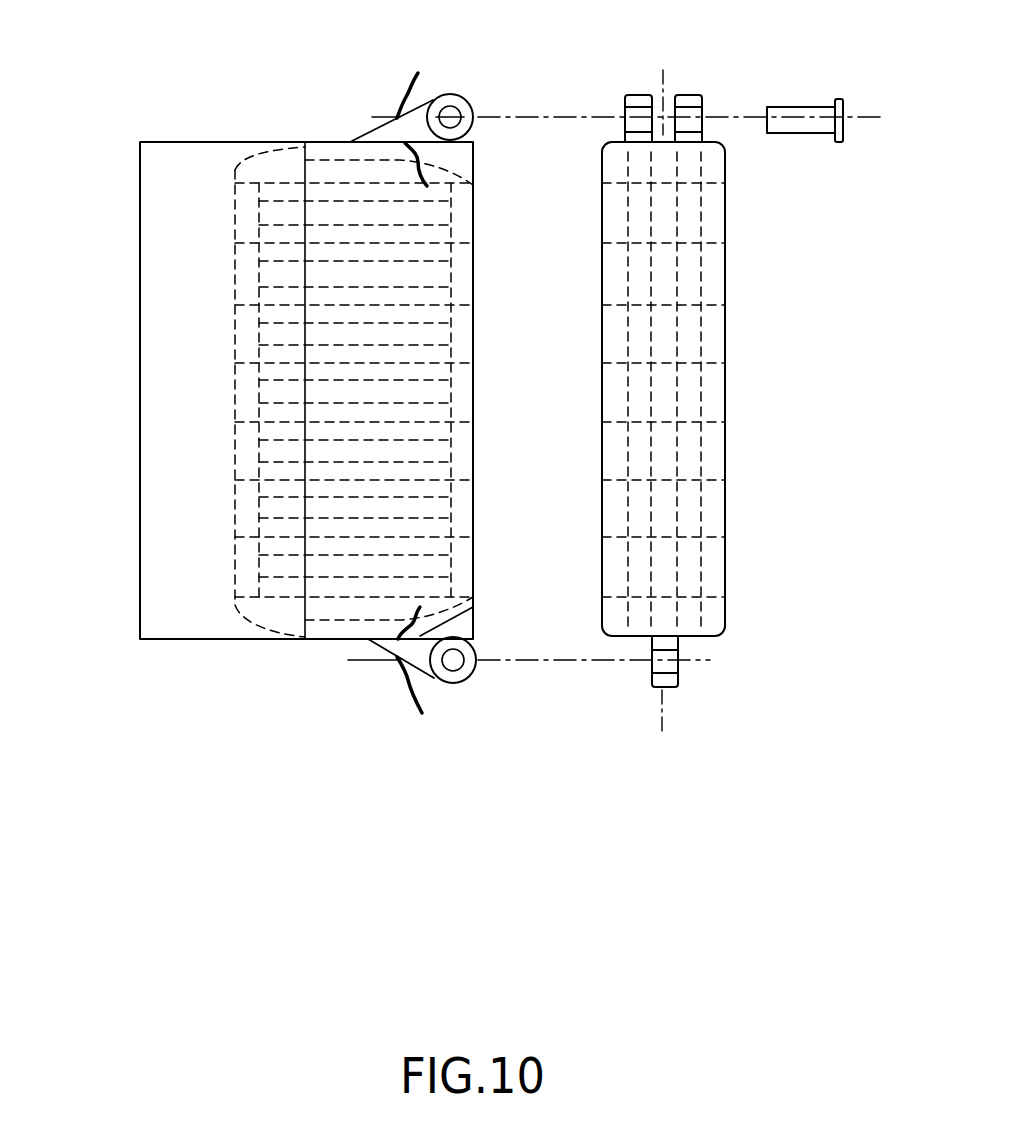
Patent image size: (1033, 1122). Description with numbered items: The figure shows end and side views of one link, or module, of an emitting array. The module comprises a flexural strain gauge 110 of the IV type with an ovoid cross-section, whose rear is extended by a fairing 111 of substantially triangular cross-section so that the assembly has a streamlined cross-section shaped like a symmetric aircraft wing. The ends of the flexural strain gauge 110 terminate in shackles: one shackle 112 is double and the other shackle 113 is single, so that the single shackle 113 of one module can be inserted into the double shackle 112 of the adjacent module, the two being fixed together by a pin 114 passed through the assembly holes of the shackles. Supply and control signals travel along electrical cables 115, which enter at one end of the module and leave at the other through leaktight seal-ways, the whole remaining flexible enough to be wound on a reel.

The flexural strain gauge 110 is at (460, 522).
The fairing 111 is at (160, 527).
The double shackle 112 is at (465, 105).
The single shackle 113 is at (458, 679).
The pin 114 is at (843, 101).
The electrical cables 115 is at (412, 80).